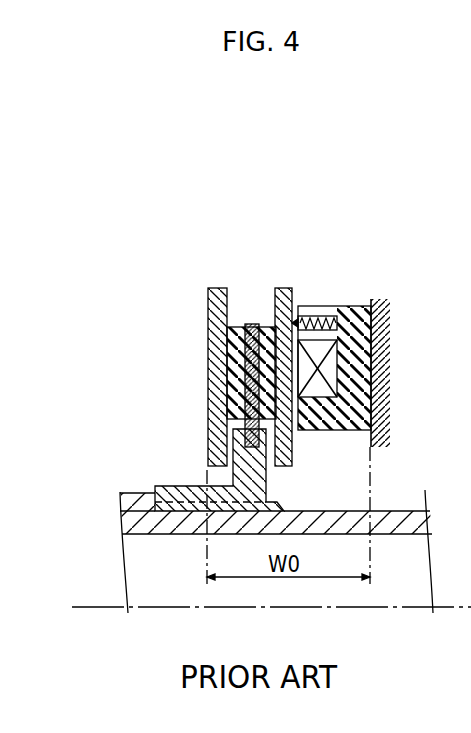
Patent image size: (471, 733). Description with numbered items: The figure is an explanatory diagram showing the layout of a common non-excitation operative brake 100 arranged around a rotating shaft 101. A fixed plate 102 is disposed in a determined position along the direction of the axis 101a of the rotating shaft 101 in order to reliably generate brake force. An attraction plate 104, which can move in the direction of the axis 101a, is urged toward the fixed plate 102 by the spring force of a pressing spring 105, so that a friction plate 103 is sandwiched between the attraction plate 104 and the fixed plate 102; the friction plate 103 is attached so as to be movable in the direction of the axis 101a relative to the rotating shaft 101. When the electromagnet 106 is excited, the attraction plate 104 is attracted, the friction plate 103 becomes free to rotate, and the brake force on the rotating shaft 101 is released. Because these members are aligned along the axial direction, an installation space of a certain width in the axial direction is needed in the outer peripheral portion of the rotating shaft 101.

The non-excitation operative brake 100 is at (308, 208).
The rotating shaft 101 is at (130, 489).
The axis 101a is at (84, 606).
The fixed plate 102 is at (204, 328).
The friction plate 103 is at (246, 318).
The attraction plate 104 is at (280, 282).
The pressing spring 105 is at (320, 309).
The electromagnet 106 is at (367, 298).